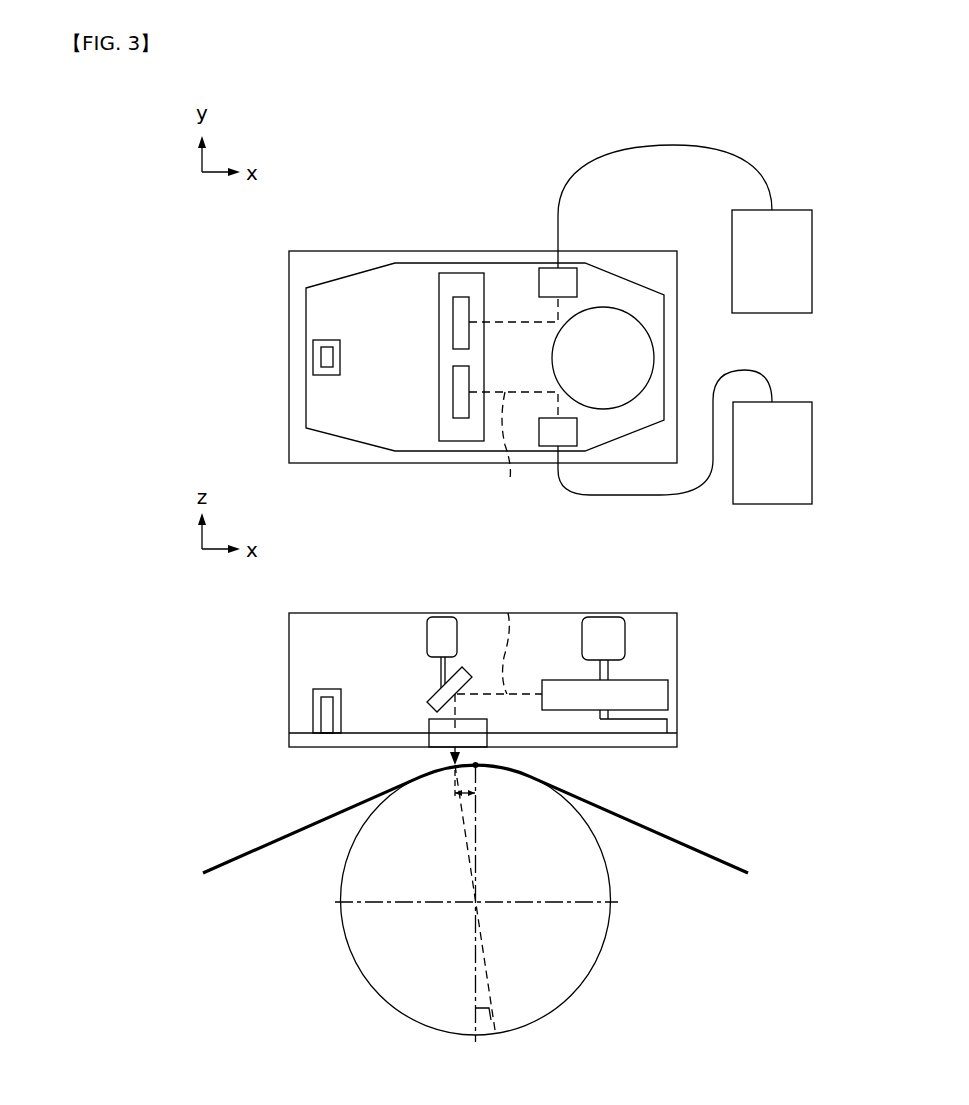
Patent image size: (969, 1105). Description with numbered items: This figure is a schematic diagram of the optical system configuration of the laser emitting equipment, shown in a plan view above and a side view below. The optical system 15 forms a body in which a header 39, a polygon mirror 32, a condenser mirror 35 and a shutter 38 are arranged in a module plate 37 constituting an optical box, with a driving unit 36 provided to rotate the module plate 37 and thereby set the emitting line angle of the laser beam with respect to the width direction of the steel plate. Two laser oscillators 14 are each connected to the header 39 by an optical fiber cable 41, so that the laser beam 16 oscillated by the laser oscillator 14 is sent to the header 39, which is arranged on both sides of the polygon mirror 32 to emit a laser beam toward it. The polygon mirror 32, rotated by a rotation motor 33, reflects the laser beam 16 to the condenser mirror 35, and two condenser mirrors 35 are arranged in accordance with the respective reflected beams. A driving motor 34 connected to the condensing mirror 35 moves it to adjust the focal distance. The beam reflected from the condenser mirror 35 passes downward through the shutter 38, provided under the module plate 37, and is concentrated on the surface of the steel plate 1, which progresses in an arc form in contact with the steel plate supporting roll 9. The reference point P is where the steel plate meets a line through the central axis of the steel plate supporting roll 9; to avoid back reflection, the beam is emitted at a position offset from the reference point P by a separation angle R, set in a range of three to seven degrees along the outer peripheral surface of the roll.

The steel plate 1 is at (262, 847).
The steel plate supporting roll 9 is at (582, 952).
The laser oscillator 14 is at (812, 262).
The optical system 15 is at (282, 248).
The laser beam 16 is at (508, 481).
The polygon mirror 32 is at (642, 352).
The rotation motor 33 is at (604, 612).
The driving motor 34 is at (441, 612).
The condensing mirror 35 is at (453, 375).
The driving unit 36 is at (321, 355).
The module plate 37 is at (330, 418).
The shutter 38 is at (439, 300).
The header 39 is at (539, 278).
The optical fiber cable 41 is at (587, 170).
The reference point P is at (478, 768).
The separation angle R is at (456, 793).